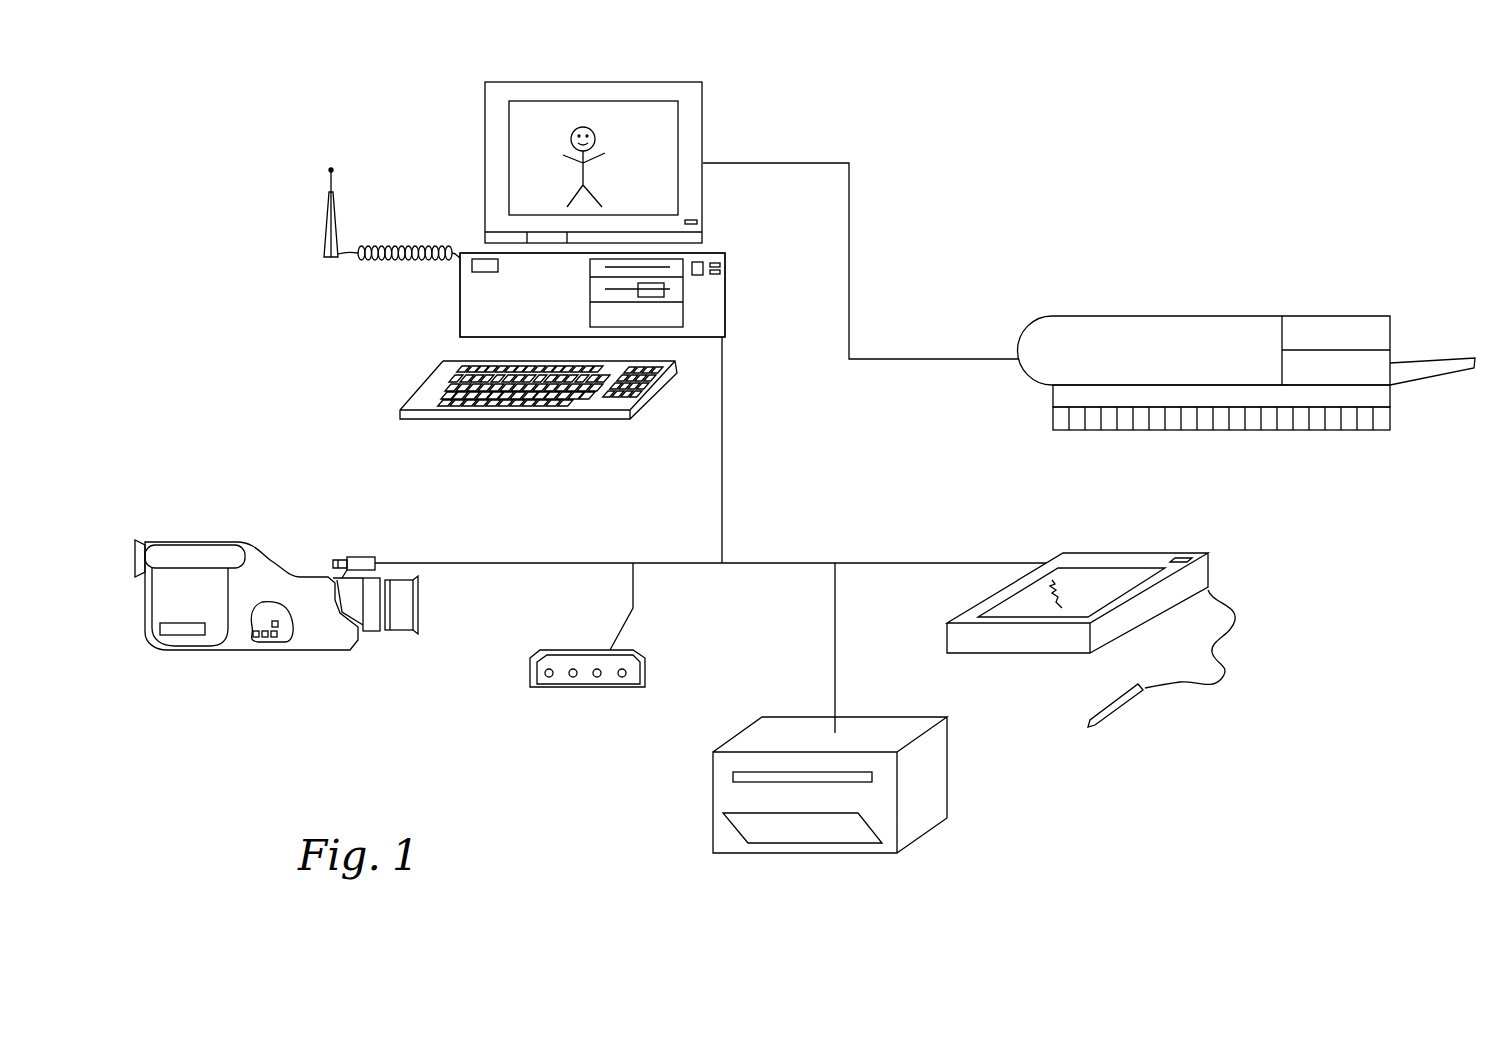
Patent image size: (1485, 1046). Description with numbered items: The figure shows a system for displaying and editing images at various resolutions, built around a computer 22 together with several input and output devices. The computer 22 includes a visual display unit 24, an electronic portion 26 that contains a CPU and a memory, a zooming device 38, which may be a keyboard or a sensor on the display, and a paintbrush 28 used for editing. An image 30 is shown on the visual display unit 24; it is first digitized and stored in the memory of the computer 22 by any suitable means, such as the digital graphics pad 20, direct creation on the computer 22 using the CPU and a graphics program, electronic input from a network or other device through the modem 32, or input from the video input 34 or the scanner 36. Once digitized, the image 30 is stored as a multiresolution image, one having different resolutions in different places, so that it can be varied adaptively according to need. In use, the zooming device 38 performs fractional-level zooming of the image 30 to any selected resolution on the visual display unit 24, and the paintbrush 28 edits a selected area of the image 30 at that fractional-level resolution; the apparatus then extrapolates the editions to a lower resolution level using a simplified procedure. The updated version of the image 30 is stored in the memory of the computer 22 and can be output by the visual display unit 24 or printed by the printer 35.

The graphics pad 20 is at (1203, 572).
The computer 22 is at (725, 273).
The visual display unit 24 is at (678, 117).
The electronic portion 26 is at (460, 297).
The paintbrush 28 is at (333, 202).
The image 30 is at (583, 127).
The modem 32 is at (645, 660).
The video input 34 is at (358, 557).
The printer 35 is at (1167, 332).
The scanner 36 is at (933, 750).
The zooming device 38 is at (652, 398).